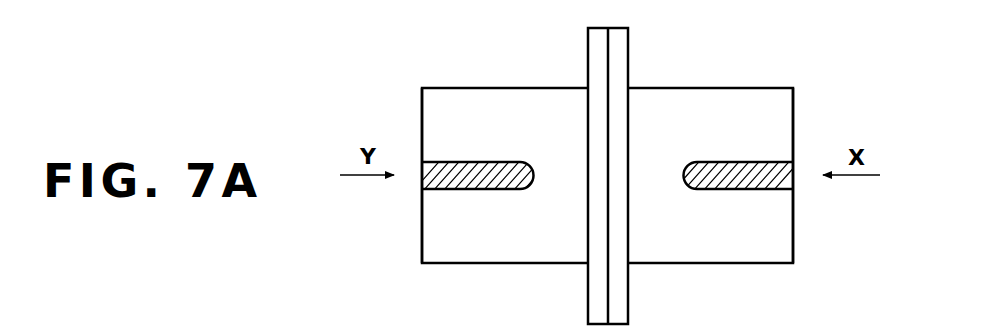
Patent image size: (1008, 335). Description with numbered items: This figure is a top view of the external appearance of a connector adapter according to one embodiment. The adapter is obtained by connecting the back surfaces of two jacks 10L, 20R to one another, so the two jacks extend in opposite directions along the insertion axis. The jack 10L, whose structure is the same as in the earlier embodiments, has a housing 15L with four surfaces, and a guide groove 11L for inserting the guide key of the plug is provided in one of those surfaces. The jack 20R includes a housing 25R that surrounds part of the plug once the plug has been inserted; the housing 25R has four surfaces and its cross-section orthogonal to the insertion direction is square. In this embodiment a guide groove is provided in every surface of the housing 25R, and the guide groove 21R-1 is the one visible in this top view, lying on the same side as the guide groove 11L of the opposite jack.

The jack 10L is at (533, 38).
The jack 20R is at (774, 38).
The housing 15L is at (421, 89).
The housing 25R is at (795, 89).
The guide groove 11L is at (500, 162).
The guide groove 21R-1 is at (715, 162).